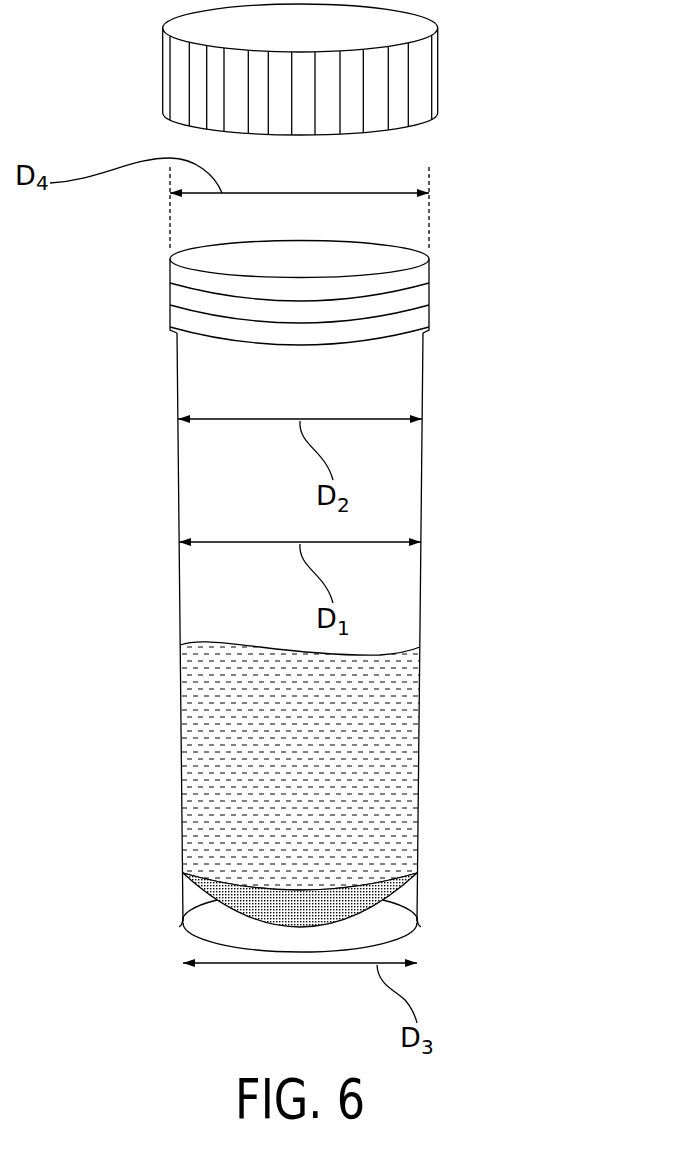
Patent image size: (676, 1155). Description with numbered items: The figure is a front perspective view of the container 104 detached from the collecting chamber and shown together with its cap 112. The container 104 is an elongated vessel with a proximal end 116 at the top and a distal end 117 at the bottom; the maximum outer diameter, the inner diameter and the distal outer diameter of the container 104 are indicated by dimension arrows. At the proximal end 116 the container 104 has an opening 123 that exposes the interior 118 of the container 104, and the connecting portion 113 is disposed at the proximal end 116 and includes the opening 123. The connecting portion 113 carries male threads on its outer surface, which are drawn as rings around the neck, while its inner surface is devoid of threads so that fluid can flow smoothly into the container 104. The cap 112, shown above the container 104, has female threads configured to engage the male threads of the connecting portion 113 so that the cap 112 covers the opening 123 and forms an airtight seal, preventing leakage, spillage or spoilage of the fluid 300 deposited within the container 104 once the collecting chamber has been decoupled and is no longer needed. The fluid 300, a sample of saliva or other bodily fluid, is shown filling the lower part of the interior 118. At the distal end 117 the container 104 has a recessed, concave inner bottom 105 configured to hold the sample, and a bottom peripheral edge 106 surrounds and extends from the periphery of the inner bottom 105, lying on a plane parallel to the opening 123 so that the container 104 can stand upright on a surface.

The cap 112 is at (158, 54).
The connecting portion 113 is at (170, 285).
The proximal end 116 is at (432, 287).
The opening 123 is at (390, 247).
The container 104 is at (176, 550).
The interior 118 is at (182, 672).
The fluid 300 is at (392, 755).
The inner bottom 105 is at (185, 923).
The bottom peripheral edge 106 is at (184, 937).
The distal end 117 is at (418, 925).